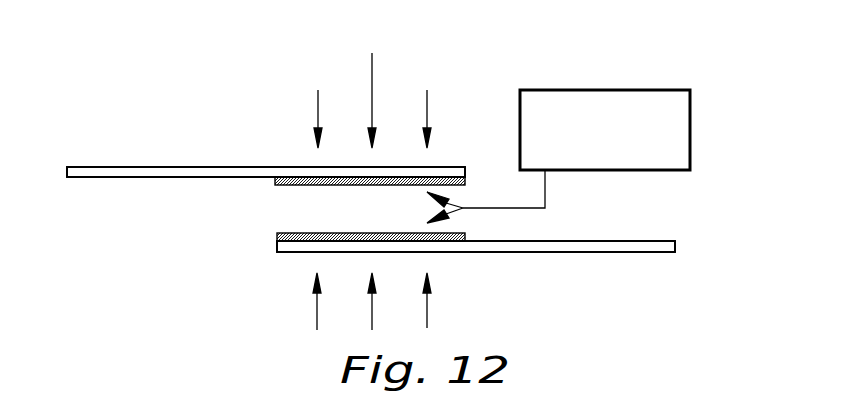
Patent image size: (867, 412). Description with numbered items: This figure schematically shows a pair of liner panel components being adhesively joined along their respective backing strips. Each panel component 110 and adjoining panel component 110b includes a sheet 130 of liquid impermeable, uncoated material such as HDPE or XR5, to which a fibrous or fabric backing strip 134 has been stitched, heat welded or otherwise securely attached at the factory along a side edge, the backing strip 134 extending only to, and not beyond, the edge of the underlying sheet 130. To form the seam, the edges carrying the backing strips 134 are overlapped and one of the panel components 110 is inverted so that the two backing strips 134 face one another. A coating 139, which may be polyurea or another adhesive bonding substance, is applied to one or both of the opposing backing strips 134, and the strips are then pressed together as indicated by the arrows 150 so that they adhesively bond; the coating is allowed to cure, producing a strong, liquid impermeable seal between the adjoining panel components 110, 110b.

The panel component 110 is at (113, 166).
The adjoining panel component 110b is at (645, 240).
The sheet 130 is at (200, 166).
The backing strip 134 is at (275, 181).
The coating 139 is at (690, 125).
The arrows 150 is at (427, 90).